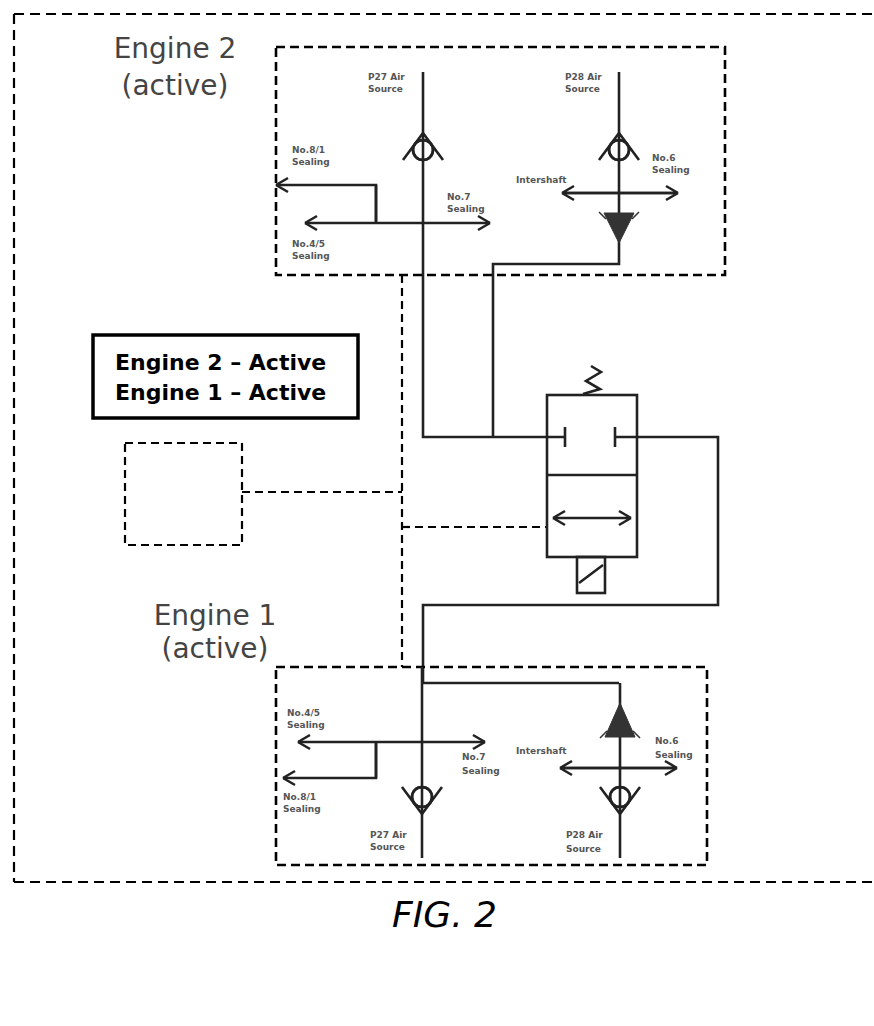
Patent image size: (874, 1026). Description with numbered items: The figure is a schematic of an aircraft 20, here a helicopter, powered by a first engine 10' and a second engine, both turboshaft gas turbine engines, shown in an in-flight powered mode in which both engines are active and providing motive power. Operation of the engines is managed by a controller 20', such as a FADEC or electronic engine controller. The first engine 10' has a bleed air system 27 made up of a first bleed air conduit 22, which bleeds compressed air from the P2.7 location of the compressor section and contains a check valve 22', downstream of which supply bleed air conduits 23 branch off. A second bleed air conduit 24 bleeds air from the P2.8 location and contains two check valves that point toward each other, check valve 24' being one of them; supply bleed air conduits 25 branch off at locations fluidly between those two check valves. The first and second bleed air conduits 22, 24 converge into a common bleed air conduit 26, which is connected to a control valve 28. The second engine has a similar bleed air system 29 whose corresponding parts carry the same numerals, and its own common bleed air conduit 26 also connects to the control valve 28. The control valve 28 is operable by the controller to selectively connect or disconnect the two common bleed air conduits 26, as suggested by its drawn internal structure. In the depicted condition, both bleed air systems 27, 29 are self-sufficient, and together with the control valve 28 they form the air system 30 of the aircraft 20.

The aircraft 20 is at (444, 448).
The controller 20' is at (183, 494).
The first engine 10' is at (491, 766).
The first bleed air conduit 22 is at (449, 467).
The check valve 22' is at (457, 473).
The supply bleed air conduits 23 is at (423, 223).
The second bleed air conduit 24 is at (645, 468).
The check valve 24' is at (653, 474).
The supply bleed air conduits 25 is at (618, 193).
The common bleed air conduit 26 is at (533, 443).
The bleed air system 27 is at (356, 587).
The control valve 28 is at (618, 395).
The bleed air system 29 is at (363, 466).
The air system 30 is at (125, 205).